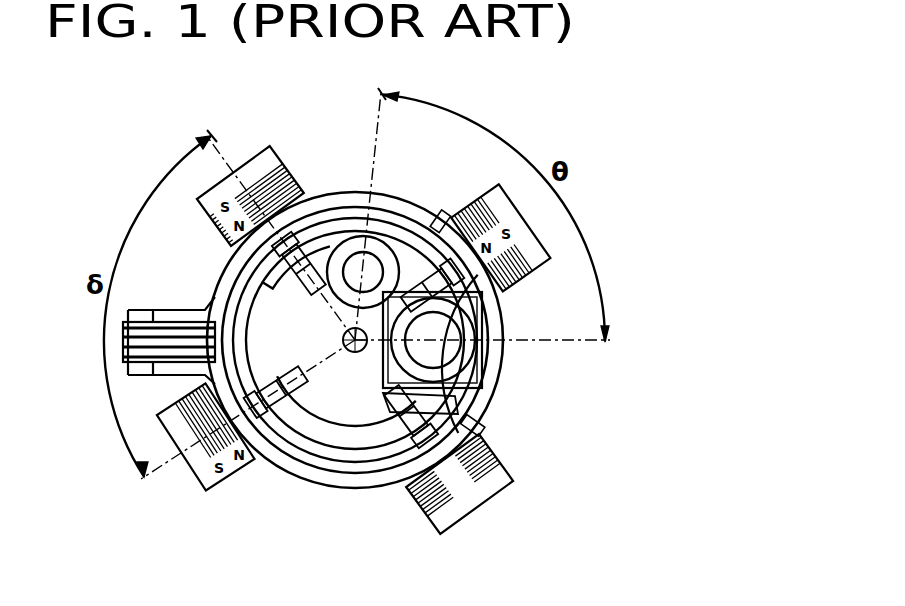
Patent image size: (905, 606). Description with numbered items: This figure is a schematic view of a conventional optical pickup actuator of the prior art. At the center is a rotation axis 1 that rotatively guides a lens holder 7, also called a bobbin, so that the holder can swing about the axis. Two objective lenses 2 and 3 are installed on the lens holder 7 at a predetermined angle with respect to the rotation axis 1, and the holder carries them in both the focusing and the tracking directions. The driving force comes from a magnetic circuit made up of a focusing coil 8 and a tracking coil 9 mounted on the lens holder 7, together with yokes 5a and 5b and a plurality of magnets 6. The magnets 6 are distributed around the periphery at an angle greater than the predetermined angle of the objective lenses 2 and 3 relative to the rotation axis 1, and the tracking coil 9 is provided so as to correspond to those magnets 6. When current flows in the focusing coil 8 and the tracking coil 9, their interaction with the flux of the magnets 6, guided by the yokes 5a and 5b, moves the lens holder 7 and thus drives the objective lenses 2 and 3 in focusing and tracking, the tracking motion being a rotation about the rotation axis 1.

The rotation axis 1 is at (352, 355).
The objective lens 2 is at (468, 356).
The objective lens 3 is at (358, 250).
The yoke 5a is at (482, 428).
The yoke 5b is at (463, 525).
The magnets 6 is at (413, 500).
The lens holder 7 is at (245, 305).
The focusing coil 8 is at (350, 476).
The tracking coil 9 is at (275, 463).